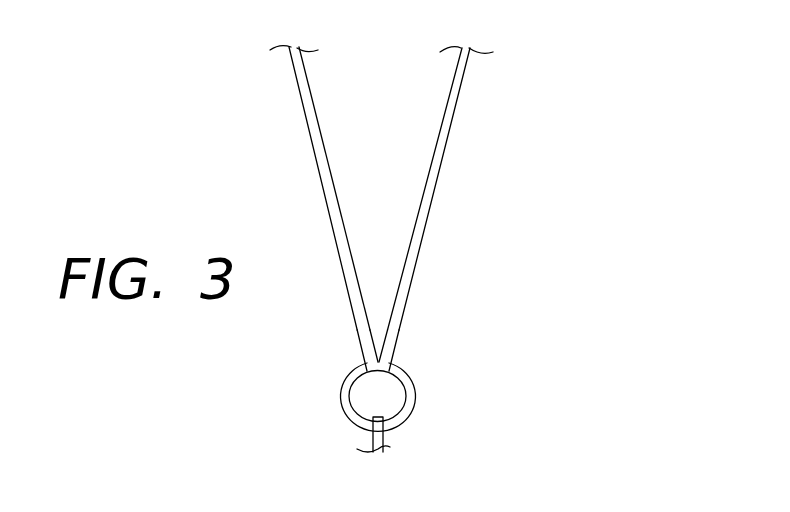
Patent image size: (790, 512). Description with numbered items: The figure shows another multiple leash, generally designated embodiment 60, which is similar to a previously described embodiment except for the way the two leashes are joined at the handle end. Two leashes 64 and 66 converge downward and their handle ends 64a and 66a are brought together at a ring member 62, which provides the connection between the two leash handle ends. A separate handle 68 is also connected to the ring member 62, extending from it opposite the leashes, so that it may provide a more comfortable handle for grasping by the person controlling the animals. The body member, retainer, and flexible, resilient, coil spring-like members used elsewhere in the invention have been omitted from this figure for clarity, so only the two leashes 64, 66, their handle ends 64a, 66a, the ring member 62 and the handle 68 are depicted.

The embodiment 60 is at (530, 143).
The ring member 62 is at (416, 393).
The leash 64 is at (430, 202).
The handle end 64a is at (398, 338).
The leash 66 is at (327, 202).
The handle end 66a is at (364, 345).
The handle 68 is at (386, 446).